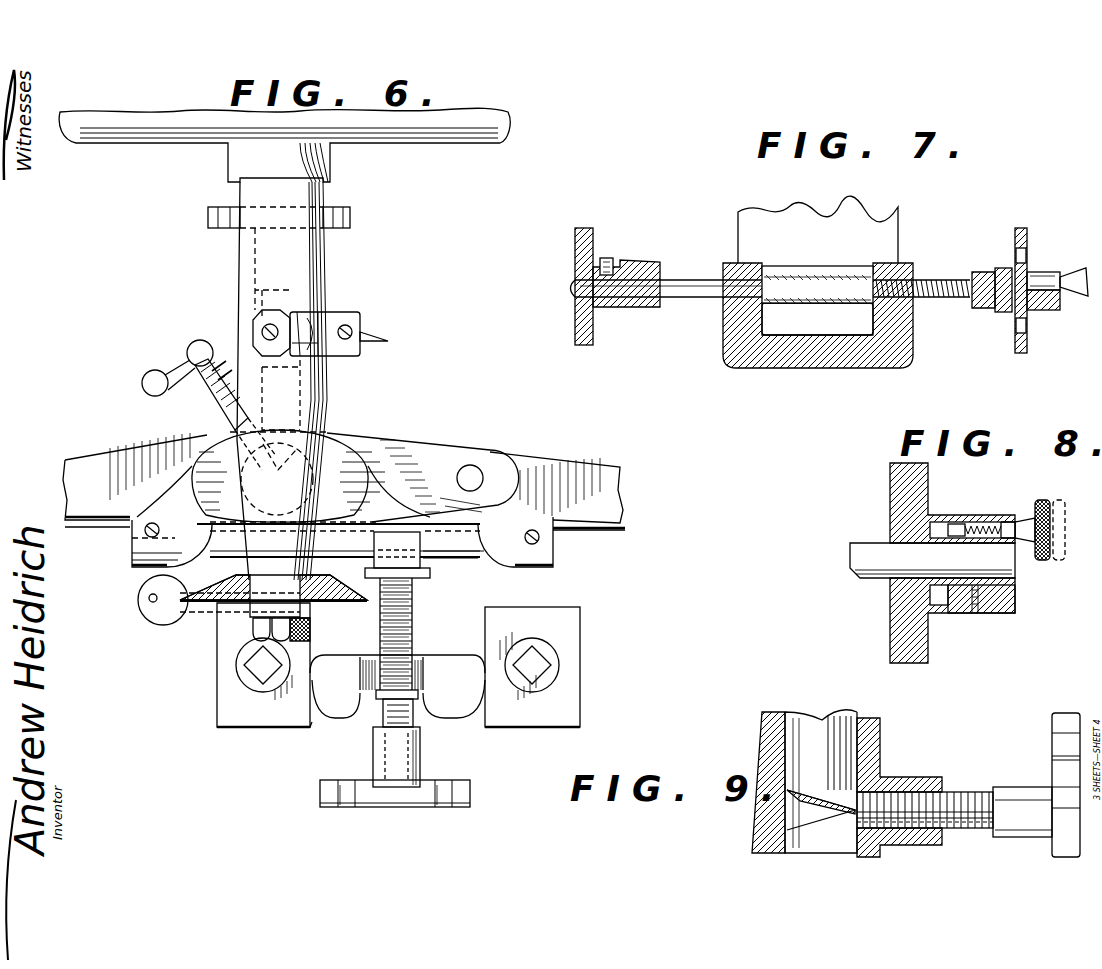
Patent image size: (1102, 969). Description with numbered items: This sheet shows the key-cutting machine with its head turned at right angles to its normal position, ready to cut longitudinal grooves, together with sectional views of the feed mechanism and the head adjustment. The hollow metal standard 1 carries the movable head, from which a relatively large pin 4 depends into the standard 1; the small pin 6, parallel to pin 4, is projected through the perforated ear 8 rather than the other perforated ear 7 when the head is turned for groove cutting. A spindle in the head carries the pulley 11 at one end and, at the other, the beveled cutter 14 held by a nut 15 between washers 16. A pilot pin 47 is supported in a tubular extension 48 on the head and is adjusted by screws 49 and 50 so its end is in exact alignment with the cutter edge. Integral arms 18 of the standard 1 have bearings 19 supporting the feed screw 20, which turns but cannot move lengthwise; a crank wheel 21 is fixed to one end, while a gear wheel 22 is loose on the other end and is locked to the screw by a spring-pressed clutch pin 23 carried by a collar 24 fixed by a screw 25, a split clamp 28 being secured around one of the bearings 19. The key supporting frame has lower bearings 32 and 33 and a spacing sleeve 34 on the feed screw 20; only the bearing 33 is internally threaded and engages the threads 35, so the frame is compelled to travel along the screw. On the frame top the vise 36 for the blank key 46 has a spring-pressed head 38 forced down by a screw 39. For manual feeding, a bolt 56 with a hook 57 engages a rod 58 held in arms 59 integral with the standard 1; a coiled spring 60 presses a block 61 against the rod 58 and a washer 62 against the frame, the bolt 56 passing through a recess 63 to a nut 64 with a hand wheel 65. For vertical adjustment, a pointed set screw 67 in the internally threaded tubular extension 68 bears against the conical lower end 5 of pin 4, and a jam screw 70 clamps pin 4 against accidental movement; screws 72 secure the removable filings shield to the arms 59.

In FIG. 6, the standard 1 is at (355, 476).
In FIG. 9, the standard 1 is at (872, 740).
In FIG. 6, the depending pin 4 is at (208, 476).
In FIG. 9, the depending pin 4 is at (807, 742).
In FIG. 6, the beveled lower end 5 is at (300, 453).
In FIG. 9, the beveled lower end 5 is at (830, 806).
In FIG. 6, the small pin 6 is at (330, 386).
In FIG. 6, the perforated ear 7 is at (450, 455).
In FIG. 6, the perforated ear 8 is at (252, 318).
In FIG. 6, the pulley 11 is at (408, 128).
In FIG. 6, the cutter 14 is at (215, 592).
In FIG. 6, the nut 15 is at (258, 624).
In FIG. 6, the washers 16 is at (312, 604).
In FIG. 6, the arms 18 is at (80, 462).
In FIG. 7, the bearings 19 is at (655, 255).
In FIG. 7, the feed screw 20 is at (680, 282).
In FIG. 8, the feed screw 20 is at (872, 555).
In FIG. 7, the crank wheel 21 is at (596, 337).
In FIG. 7, the gear wheel 22 is at (1021, 353).
In FIG. 8, the gear wheel 22 is at (900, 635).
In FIG. 7, the clutch pin 23 is at (1072, 274).
In FIG. 8, the clutch pin 23 is at (1040, 562).
In FIG. 7, the collar 24 is at (1040, 278).
In FIG. 8, the collar 24 is at (968, 612).
In FIG. 7, the screw 25 is at (1047, 312).
In FIG. 8, the screw 25 is at (998, 613).
In FIG. 7, the split clamp 28 is at (1002, 312).
In FIG. 7, the bearing 32 is at (735, 297).
In FIG. 7, the bearing 33 is at (905, 308).
In FIG. 7, the spacing sleeve 34 is at (817, 320).
In FIG. 7, the threads 35 is at (927, 280).
In FIG. 6, the vise 36 is at (232, 727).
In FIG. 6, the spring-pressed head 38 is at (237, 698).
In FIG. 6, the screw 39 is at (255, 665).
In FIG. 6, the blank key 46 is at (160, 612).
In FIG. 6, the pilot pin 47 is at (384, 335).
In FIG. 6, the tubular extension 48 is at (346, 357).
In FIG. 6, the screw 49 is at (345, 325).
In FIG. 6, the screw 50 is at (262, 330).
In FIG. 6, the bolt 56 is at (415, 712).
In FIG. 6, the hook 57 is at (412, 557).
In FIG. 6, the rod 58 is at (490, 562).
In FIG. 6, the arms 59 is at (140, 546).
In FIG. 6, the coiled spring 60 is at (413, 637).
In FIG. 6, the block 61 is at (412, 568).
In FIG. 6, the washer 62 is at (378, 690).
In FIG. 6, the recess 63 is at (380, 700).
In FIG. 6, the nut 64 is at (420, 767).
In FIG. 6, the hand wheel 65 is at (335, 792).
In FIG. 6, the set screw 67 is at (235, 427).
In FIG. 9, the set screw 67 is at (978, 792).
In FIG. 9, the tubular extension 68 is at (908, 832).
In FIG. 6, the jam screw 70 is at (146, 380).
In FIG. 6, the screws 72 is at (150, 538).